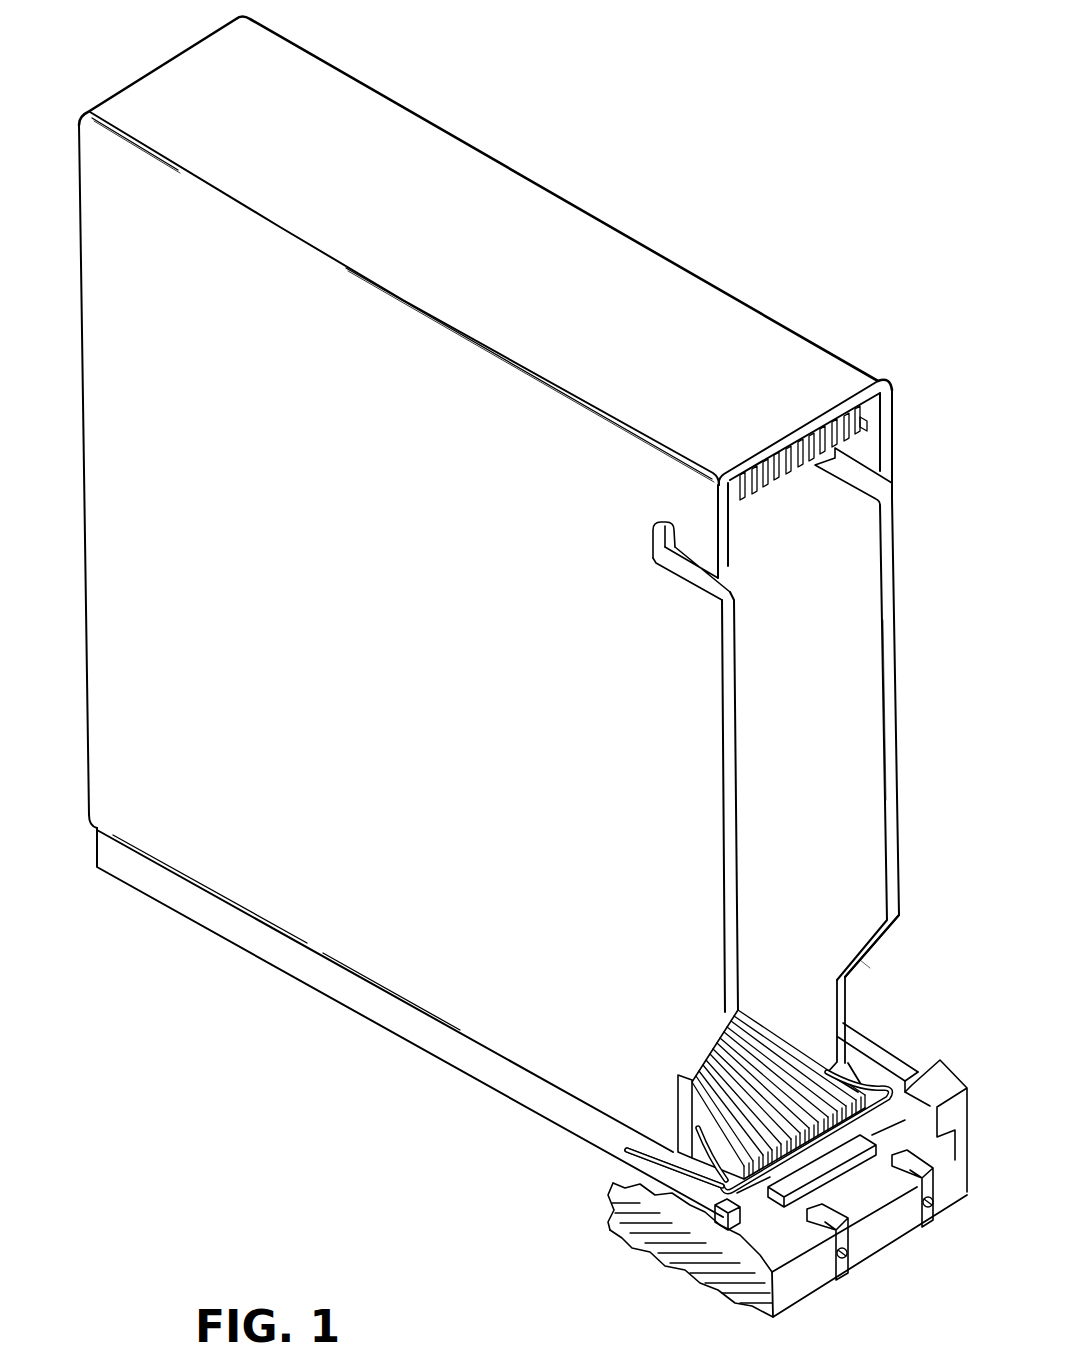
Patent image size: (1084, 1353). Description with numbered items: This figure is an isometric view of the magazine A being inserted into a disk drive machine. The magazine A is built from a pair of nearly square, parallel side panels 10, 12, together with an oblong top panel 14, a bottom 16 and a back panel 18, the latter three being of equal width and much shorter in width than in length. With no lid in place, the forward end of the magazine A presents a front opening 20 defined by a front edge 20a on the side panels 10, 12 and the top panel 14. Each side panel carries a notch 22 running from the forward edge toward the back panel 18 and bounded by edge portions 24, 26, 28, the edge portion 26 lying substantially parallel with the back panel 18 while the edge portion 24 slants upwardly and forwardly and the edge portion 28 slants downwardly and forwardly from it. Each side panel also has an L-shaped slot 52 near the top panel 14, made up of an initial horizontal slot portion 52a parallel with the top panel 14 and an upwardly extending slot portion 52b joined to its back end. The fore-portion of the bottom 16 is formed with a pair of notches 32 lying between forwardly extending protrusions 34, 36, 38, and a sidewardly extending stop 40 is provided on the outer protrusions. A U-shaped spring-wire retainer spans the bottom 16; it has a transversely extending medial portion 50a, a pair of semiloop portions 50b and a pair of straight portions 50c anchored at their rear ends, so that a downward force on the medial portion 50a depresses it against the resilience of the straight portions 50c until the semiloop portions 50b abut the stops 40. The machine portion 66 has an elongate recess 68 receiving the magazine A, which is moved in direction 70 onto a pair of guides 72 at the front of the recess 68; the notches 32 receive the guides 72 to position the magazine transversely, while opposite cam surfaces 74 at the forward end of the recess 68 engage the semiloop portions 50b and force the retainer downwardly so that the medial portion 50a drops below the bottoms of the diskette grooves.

The side panel 10 is at (360, 612).
The side panel 12 is at (897, 592).
The top panel 14 is at (492, 262).
The bottom 16 is at (340, 1003).
The back panel 18 is at (85, 636).
The front opening 20 is at (830, 695).
The front edge 20a is at (897, 755).
The notch 22 is at (858, 976).
The edge portion 24 is at (895, 928).
The edge portion 26 is at (847, 1000).
The edge portion 28 is at (850, 1067).
The notch 32 is at (868, 1138).
The protrusion 34 is at (900, 1163).
The protrusion 36 is at (800, 1198).
The protrusion 38 is at (736, 1215).
The stop 40 is at (718, 1222).
The medial portion 50a is at (823, 1068).
The semiloop portion 50b is at (712, 1177).
The straight portion 50c is at (660, 1160).
The L-shaped slot 52 is at (670, 556).
The horizontally extending slot portion 52a is at (710, 578).
The upwardly extending slot portion 52b is at (670, 528).
The machine portion 66 is at (974, 1126).
The recess 68 is at (887, 1067).
The direction 70 is at (222, 978).
The guide 72 is at (922, 1222).
The cam surface 74 is at (933, 1170).
The magazine A is at (81, 365).